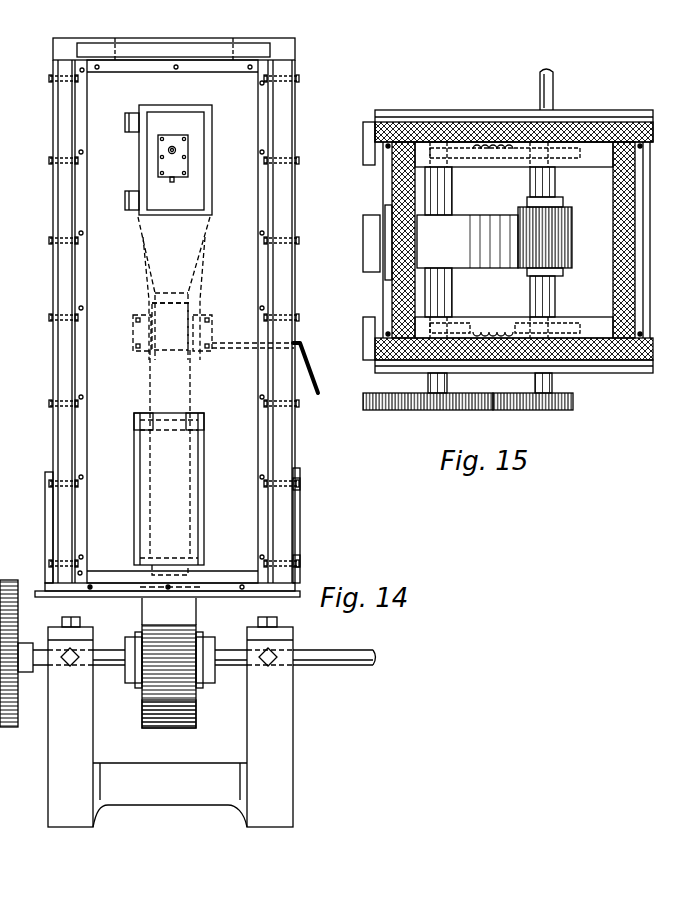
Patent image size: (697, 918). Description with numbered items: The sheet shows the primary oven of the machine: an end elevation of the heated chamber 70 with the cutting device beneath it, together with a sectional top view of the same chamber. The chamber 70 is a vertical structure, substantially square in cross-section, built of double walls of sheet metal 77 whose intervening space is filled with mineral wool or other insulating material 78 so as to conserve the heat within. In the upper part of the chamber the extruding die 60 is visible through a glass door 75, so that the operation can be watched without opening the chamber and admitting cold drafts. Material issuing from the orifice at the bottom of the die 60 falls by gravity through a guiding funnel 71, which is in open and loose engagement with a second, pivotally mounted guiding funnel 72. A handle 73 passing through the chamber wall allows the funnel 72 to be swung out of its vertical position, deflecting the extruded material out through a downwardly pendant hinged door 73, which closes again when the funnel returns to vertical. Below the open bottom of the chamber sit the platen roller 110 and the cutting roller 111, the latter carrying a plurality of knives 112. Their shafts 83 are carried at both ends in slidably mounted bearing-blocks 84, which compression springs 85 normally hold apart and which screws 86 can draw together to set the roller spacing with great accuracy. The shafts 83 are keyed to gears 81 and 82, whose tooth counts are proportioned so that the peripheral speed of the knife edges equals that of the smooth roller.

In FIG. 14, the extruding die 60 is at (181, 166).
In FIG. 14, the chamber 70 is at (294, 302).
In FIG. 15, the chamber 70 is at (599, 119).
In FIG. 14, the guiding funnel 71 is at (182, 272).
In FIG. 14, the pivotally mounted guiding funnel 72 is at (187, 402).
In FIG. 14, the handle and hinged door 73 is at (205, 506).
In FIG. 14, the glass door 75 is at (199, 152).
In FIG. 15, the double walls of sheet metal 77 is at (636, 235).
In FIG. 15, the insulating material 78 is at (637, 300).
In FIG. 14, the gear 81 is at (13, 729).
In FIG. 15, the gear 81 is at (430, 408).
In FIG. 15, the gear 82 is at (563, 410).
In FIG. 14, the shafts 83 is at (339, 655).
In FIG. 15, the shafts 83 is at (554, 91).
In FIG. 15, the bearing-blocks 84 is at (456, 160).
In FIG. 15, the compression springs 85 is at (516, 160).
In FIG. 14, the screws 86 is at (62, 664).
In FIG. 14, the platen roller 110 is at (182, 729).
In FIG. 14, the cutting roller 111 is at (198, 648).
In FIG. 15, the cutting roller 111 is at (563, 208).
In FIG. 14, the knives 112 is at (184, 636).
In FIG. 15, the knives 112 is at (598, 250).